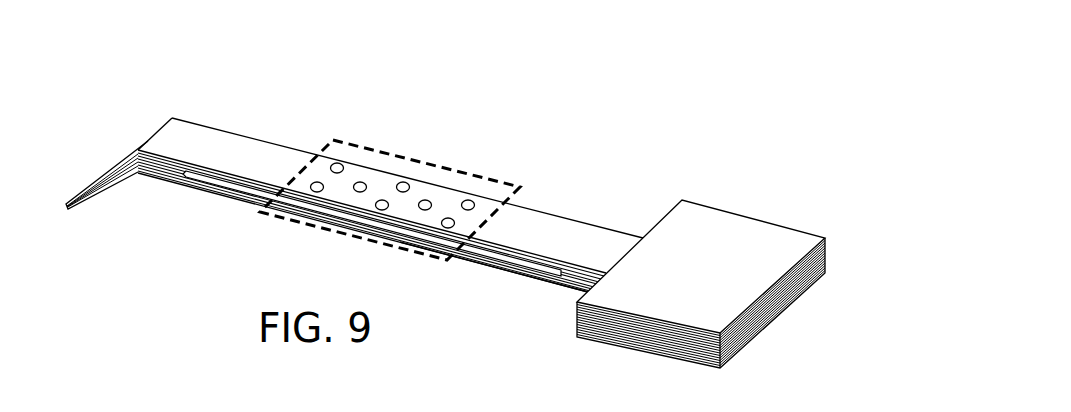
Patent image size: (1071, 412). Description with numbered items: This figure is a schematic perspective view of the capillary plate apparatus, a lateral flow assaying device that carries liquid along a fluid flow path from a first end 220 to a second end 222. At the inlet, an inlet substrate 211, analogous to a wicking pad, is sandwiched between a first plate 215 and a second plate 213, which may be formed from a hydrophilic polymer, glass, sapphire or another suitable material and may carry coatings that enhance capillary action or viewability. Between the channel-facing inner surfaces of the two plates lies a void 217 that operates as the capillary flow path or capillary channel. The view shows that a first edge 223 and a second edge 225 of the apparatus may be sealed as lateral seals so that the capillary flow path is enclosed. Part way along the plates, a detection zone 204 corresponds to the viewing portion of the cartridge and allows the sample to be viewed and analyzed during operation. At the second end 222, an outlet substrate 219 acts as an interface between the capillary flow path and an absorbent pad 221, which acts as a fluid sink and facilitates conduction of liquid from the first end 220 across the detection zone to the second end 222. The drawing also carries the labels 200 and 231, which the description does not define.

The sensor assembly 200 is at (531, 123).
The detection zone 204 is at (441, 164).
The inlet substrate 211 is at (116, 160).
The second plate 213 is at (485, 266).
The first plate 215 is at (545, 212).
The void 217 is at (548, 268).
The outlet substrate 219 is at (731, 212).
The first end 220 is at (186, 121).
The absorbent pad 221 is at (722, 275).
The second end 222 is at (544, 309).
The first edge 223 is at (202, 191).
The second edge 225 is at (268, 142).
The openings 231 is at (359, 181).